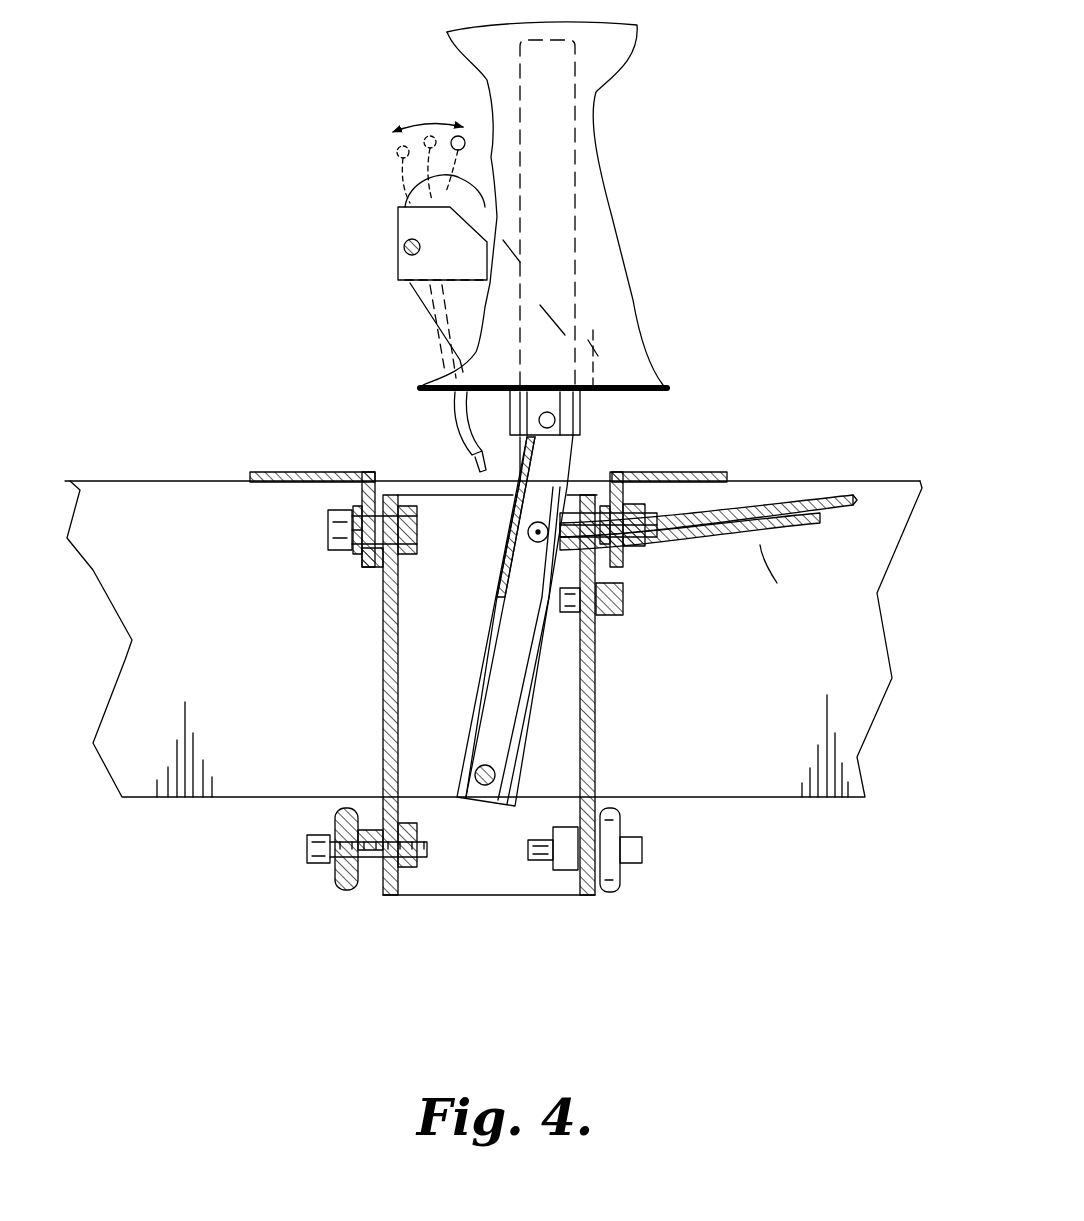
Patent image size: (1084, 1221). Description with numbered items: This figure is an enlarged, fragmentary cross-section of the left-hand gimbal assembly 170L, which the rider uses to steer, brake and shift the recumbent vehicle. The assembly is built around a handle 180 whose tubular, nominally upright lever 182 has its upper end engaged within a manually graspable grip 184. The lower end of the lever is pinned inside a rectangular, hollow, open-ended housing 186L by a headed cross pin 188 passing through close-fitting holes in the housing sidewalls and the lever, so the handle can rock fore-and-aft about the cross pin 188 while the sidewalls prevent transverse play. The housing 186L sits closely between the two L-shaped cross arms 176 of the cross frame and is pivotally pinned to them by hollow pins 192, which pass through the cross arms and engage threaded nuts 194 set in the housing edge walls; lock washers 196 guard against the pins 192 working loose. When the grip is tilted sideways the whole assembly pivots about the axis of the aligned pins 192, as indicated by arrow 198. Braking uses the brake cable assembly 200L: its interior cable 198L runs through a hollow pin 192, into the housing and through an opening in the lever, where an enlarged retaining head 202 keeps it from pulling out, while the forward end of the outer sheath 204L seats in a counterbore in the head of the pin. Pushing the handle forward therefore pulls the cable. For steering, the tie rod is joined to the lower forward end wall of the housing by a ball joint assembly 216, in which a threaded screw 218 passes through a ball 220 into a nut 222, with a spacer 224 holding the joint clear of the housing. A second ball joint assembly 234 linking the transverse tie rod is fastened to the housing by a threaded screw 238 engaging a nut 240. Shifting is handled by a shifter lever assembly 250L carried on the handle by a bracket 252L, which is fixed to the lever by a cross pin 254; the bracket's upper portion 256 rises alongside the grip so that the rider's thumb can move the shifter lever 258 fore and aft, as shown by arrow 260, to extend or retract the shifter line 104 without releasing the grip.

The shifter line 104 is at (457, 447).
The gimbal assembly 170L is at (752, 343).
The cross arms 176 is at (305, 472).
The handle 180 is at (658, 268).
The lever 182 is at (467, 722).
The grip 184 is at (598, 150).
The housing 186L is at (540, 898).
The cross pin 188 is at (477, 813).
The hollow pins 192 is at (333, 550).
The threaded nuts 194 is at (378, 568).
The lock washers 196 is at (357, 570).
The arrow 198 is at (742, 503).
The interior cable 198L is at (832, 494).
The brake cable assembly 200L is at (777, 583).
The retaining head 202 is at (530, 548).
The outer sheath 204L is at (782, 527).
The ball joint assembly 216 is at (350, 887).
The threaded screw 218 is at (307, 863).
The ball 220 is at (327, 873).
The nut 222 is at (417, 870).
The spacer 224 is at (370, 873).
The ball joint assembly 234 is at (613, 888).
The threaded screw 238 is at (643, 845).
The nut 240 is at (570, 827).
The shifter lever assembly 250L is at (393, 193).
The bracket 252L is at (418, 305).
The cross pin 254 is at (583, 418).
The upper portion 256 is at (430, 290).
The shifter lever 258 is at (460, 136).
The arrow 260 is at (430, 123).